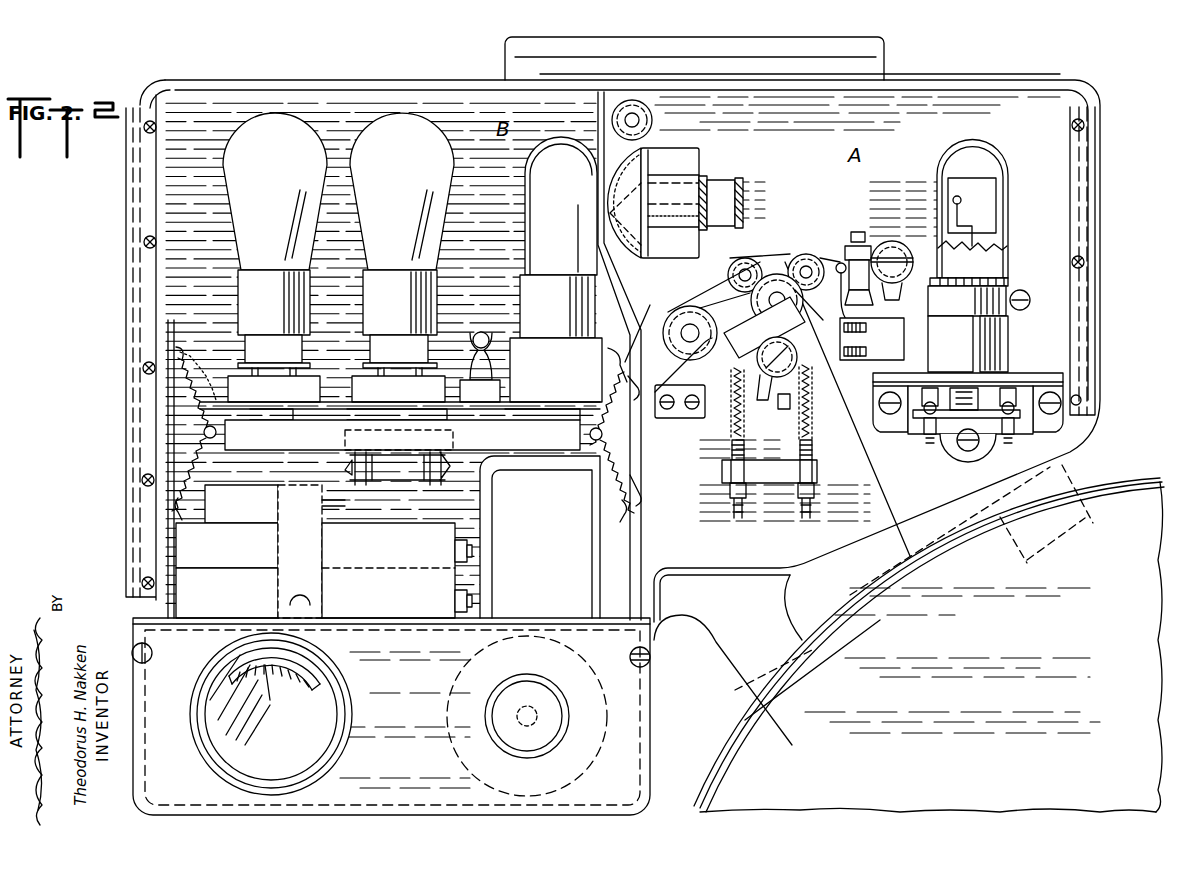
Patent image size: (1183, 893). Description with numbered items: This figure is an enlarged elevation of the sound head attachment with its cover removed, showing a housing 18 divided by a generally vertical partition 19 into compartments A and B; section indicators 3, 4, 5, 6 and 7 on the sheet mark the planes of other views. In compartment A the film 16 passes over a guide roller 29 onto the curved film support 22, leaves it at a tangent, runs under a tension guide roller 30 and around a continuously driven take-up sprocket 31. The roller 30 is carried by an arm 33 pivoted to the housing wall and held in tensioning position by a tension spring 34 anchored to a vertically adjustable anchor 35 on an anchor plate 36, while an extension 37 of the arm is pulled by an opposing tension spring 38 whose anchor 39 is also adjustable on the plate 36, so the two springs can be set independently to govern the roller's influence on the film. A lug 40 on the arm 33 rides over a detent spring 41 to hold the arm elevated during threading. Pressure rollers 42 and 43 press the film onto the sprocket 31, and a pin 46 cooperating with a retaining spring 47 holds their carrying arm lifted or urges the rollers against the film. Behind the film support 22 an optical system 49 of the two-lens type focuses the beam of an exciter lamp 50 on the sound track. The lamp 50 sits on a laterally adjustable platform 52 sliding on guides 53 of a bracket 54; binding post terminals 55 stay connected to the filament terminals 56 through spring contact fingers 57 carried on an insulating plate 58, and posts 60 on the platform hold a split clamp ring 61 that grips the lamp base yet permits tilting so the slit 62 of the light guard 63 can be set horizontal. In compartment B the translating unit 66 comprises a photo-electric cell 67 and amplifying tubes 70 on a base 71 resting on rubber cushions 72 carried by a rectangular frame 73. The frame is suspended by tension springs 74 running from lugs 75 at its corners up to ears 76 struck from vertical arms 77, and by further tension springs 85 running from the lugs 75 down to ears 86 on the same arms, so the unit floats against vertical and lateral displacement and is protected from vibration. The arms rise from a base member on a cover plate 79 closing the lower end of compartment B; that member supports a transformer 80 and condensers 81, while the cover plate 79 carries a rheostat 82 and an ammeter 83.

The section line 3- 3 is at (583, 165).
The section line 4- 4 is at (125, 153).
The section line 5- 5 is at (487, 33).
The section line 6- 6 is at (1030, 122).
The section line 7- 7 is at (652, 108).
The film 16 is at (876, 500).
The housing 18 is at (940, 90).
The partition 19 is at (618, 296).
The film support 22 is at (688, 160).
The guide roller 29 is at (646, 124).
The tension guide roller 30 is at (708, 306).
The take-up sprocket 31 is at (792, 260).
The arm 33 is at (765, 373).
The tension spring 34 is at (746, 434).
The anchor 35 is at (740, 508).
The anchor plate 36 is at (769, 471).
The extension 37 is at (812, 378).
The tension spring 38 is at (814, 434).
The anchor 39 is at (812, 498).
The lug 40 is at (772, 305).
The detent spring 41 is at (730, 357).
The pressure roller 42 is at (745, 258).
The pressure roller 43 is at (808, 252).
The pin 46 is at (835, 294).
The retaining spring 47 is at (866, 296).
The optical system 49 is at (714, 174).
The exciter lamp 50 is at (1006, 168).
The platform 52 is at (1010, 378).
The guides 53 is at (900, 392).
The bracket 54 is at (960, 455).
The binding post terminals 55 is at (926, 434).
The filament terminals 56 is at (1008, 386).
The spring contact fingers 57 is at (925, 410).
The insulating plate 58 is at (950, 438).
The posts 60 is at (938, 335).
The split clamp ring 61 is at (1000, 296).
The slit 62 is at (946, 200).
The light guard 63 is at (972, 186).
The translating unit 66 is at (232, 368).
The photo-electric cell 67 is at (556, 269).
The amplifying tubes 70 is at (338, 191).
The base 71 is at (230, 404).
The rubber cushions 72 is at (268, 408).
The frame 73 is at (415, 427).
The tension springs 74 is at (200, 411).
The lugs 75 is at (205, 436).
The ears 76 is at (178, 348).
The vertical arms 77 is at (172, 428).
The cover plate 79 is at (492, 716).
The transformer 80 is at (540, 537).
The condensers 81 is at (324, 551).
The rheostat 82 is at (629, 657).
The ammeter 83 is at (271, 714).
The tension springs 85 is at (182, 468).
The ears 86 is at (180, 508).